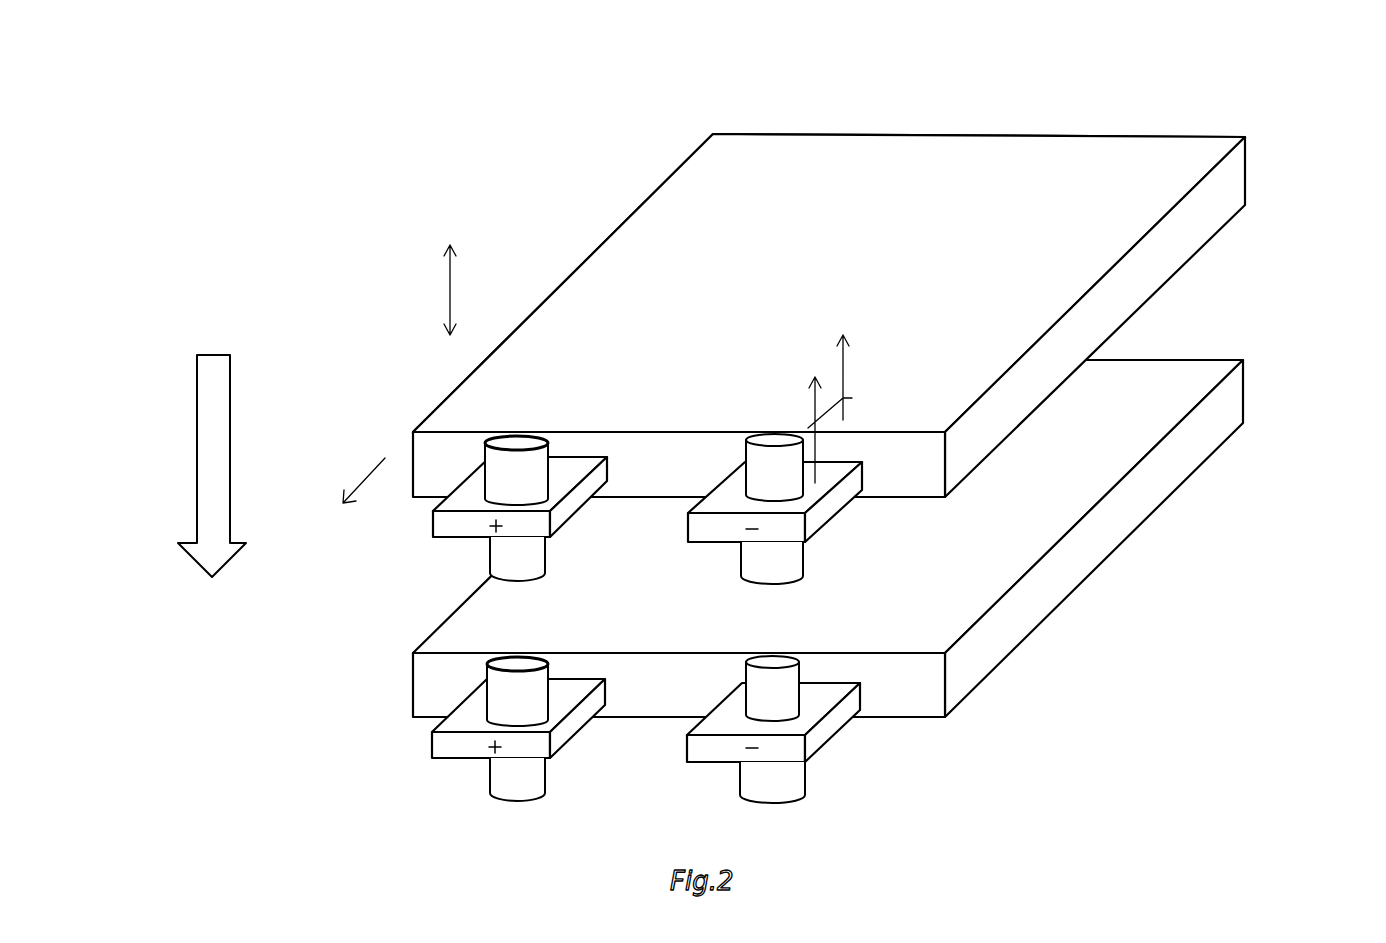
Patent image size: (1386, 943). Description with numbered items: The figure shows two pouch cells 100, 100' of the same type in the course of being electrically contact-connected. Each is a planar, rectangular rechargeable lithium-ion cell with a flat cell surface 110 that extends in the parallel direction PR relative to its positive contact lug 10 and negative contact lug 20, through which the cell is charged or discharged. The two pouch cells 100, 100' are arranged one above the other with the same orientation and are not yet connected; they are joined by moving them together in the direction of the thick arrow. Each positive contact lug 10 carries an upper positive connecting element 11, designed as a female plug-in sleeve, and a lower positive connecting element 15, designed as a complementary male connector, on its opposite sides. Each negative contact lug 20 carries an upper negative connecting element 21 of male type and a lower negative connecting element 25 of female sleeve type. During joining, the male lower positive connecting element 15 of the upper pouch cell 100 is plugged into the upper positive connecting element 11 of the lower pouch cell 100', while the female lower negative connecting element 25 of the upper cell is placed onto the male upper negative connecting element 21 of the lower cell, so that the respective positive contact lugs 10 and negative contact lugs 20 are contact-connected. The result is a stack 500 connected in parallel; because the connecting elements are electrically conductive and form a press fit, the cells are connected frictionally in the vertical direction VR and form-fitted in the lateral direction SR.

The pouch cell 100 is at (851, 277).
The pouch cell 100' is at (886, 425).
The flat cell surface 110 is at (1130, 428).
The positive contact lug 10 is at (434, 532).
The upper positive connecting element 11 is at (500, 465).
The lower positive connecting element 15 is at (502, 551).
The negative contact lug 20 is at (827, 502).
The upper negative connecting element 21 is at (763, 463).
The lower negative connecting element 25 is at (757, 558).
The stack 500 is at (1128, 703).
The vertical direction VR is at (468, 290).
The lateral direction SR is at (364, 465).
The parallel direction PR is at (845, 409).